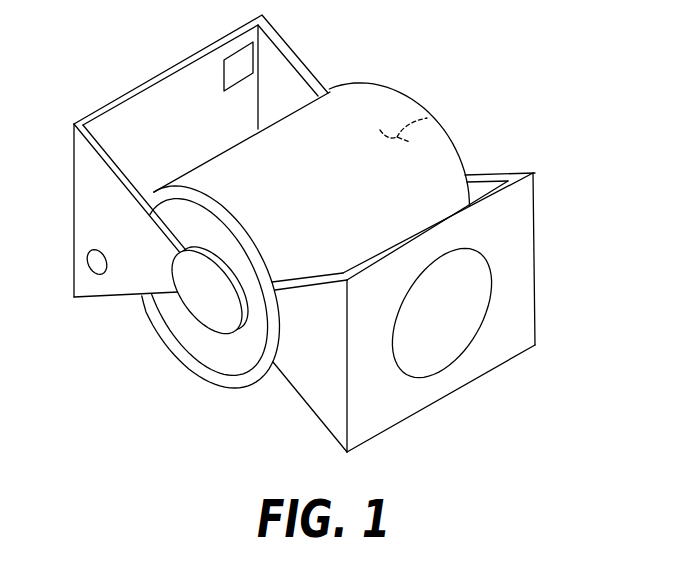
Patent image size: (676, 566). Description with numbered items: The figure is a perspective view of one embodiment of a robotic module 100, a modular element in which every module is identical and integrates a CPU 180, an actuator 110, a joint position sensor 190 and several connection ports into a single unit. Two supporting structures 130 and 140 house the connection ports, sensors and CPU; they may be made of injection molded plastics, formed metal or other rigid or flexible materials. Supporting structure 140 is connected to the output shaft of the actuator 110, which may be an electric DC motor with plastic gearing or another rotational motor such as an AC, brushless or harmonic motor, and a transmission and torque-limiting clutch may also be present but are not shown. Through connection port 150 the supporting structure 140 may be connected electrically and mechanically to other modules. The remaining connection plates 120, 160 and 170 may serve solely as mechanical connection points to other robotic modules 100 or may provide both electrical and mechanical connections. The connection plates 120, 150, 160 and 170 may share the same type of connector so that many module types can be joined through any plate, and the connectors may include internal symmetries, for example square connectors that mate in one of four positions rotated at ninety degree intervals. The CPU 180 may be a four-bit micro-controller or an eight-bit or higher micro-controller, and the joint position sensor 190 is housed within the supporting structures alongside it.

The robotic module 100 is at (552, 124).
The actuator 110 is at (343, 117).
The connection port 120 is at (462, 307).
The supporting structure 130 is at (325, 399).
The supporting structure 140 is at (88, 183).
The connection port 150 is at (143, 120).
The connection port 160 is at (428, 120).
The connection port 170 is at (202, 315).
The CPU 180 is at (240, 64).
The joint position sensor 190 is at (93, 267).